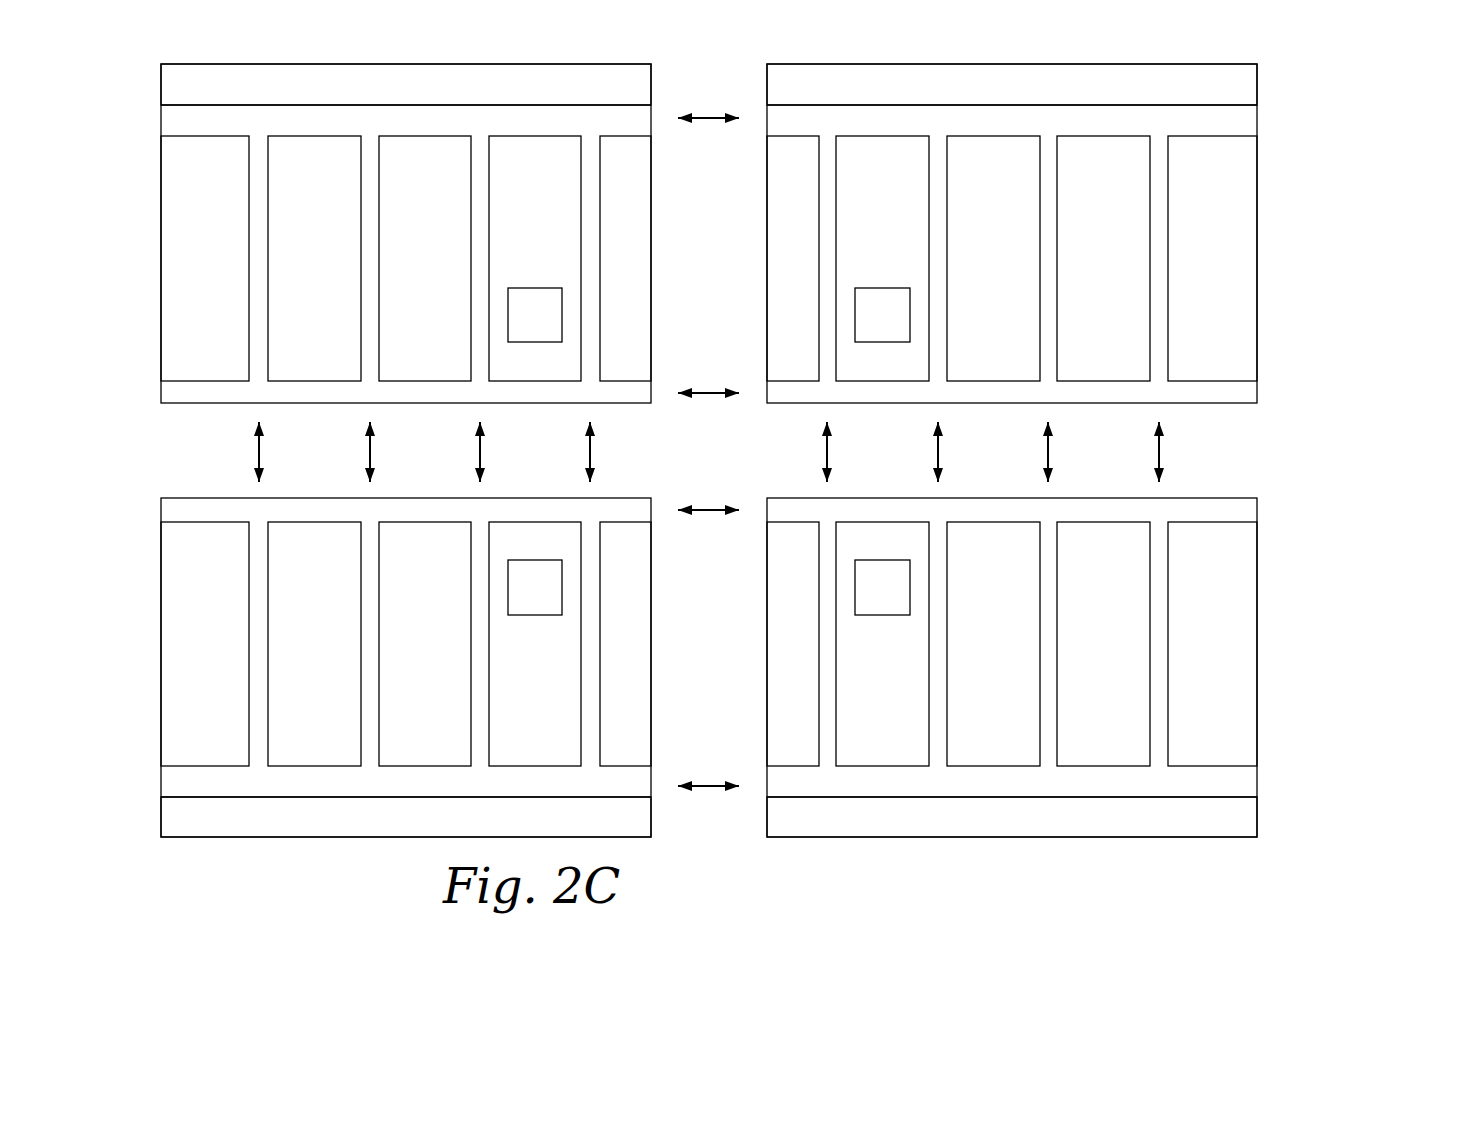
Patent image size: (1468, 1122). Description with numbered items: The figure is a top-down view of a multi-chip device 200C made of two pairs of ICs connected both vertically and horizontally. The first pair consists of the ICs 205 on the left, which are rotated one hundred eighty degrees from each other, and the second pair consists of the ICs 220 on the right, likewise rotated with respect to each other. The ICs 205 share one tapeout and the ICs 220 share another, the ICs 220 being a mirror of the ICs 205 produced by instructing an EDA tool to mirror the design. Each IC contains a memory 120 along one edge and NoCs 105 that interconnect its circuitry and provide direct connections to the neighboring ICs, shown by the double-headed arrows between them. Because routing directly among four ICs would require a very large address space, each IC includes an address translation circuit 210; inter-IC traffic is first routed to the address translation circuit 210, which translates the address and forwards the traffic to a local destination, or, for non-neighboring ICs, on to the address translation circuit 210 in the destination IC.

The multi-chip device 200C is at (768, 472).
The IC 205 is at (277, 64).
The IC 220 is at (883, 64).
The memory 120 is at (180, 83).
The NoC 105 is at (180, 124).
The address translation circuit 210 is at (543, 313).